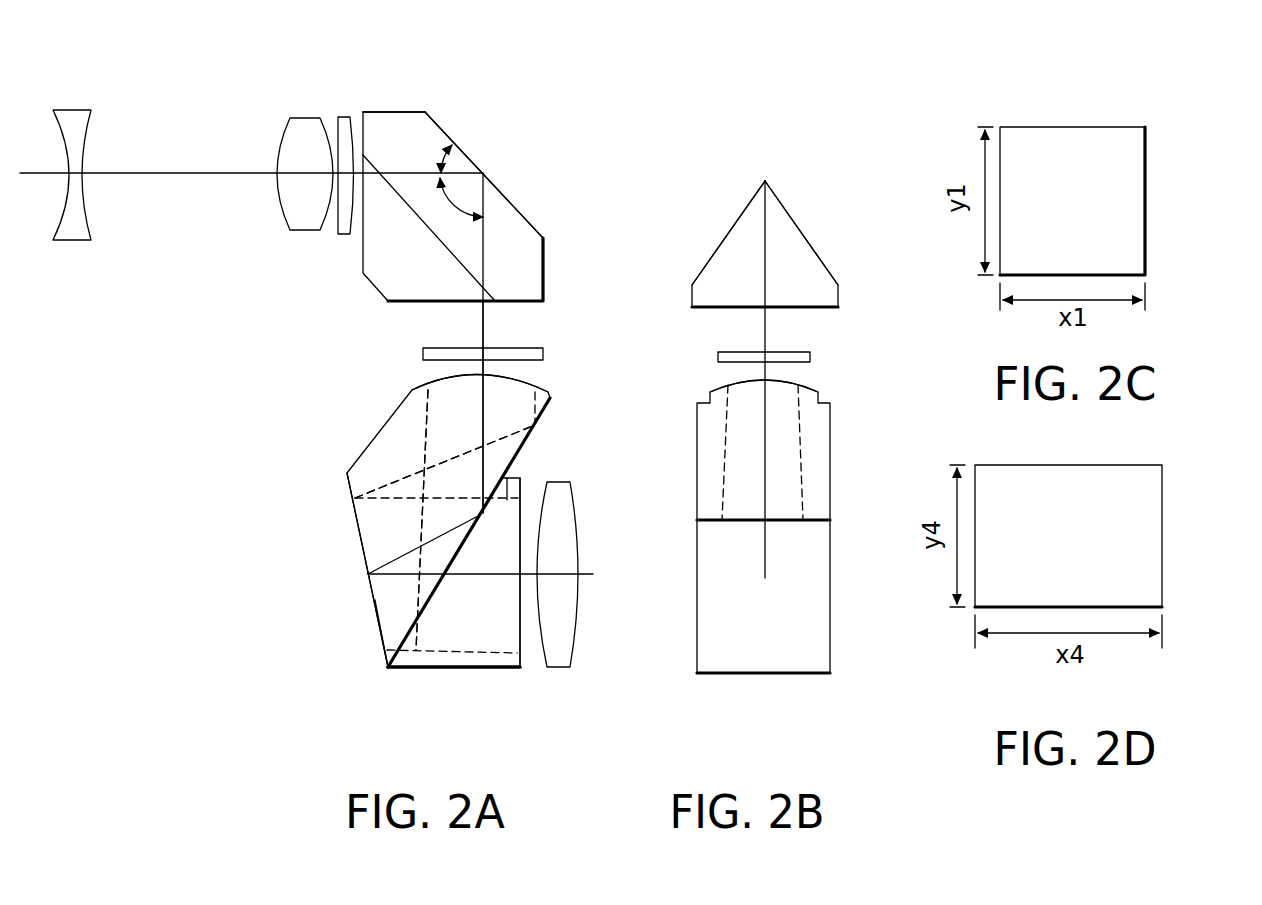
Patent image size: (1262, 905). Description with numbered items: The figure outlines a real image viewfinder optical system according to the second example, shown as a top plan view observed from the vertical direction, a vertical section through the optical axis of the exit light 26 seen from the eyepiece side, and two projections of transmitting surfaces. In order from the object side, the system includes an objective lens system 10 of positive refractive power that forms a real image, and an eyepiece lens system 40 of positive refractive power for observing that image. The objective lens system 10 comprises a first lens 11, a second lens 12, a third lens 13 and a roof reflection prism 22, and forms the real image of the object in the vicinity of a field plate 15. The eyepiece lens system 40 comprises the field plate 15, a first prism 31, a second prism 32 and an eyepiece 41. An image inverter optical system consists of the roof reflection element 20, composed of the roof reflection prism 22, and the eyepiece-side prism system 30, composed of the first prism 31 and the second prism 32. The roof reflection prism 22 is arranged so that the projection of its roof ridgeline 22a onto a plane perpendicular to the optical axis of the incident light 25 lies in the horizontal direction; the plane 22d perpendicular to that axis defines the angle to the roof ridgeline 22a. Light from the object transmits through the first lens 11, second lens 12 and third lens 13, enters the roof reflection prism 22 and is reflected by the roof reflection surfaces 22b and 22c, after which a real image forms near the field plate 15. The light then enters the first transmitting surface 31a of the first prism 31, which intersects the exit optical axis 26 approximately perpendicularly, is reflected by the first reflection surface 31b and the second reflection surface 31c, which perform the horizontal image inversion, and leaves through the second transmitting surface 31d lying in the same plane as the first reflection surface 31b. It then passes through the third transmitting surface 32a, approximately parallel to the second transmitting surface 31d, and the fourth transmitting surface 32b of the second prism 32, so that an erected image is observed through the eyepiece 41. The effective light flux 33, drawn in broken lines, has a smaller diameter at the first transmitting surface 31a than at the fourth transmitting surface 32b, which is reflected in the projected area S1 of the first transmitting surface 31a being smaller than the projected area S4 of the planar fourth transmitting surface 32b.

In FIG. 2A, the objective lens system 10 is at (345, 332).
In FIG. 2A, the first lens 11 is at (73, 110).
In FIG. 2A, the second lens 12 is at (295, 118).
In FIG. 2A, the third lens 13 is at (345, 117).
In FIG. 2A, the field plate 15 is at (543, 355).
In FIG. 2B, the field plate 15 is at (718, 357).
In FIG. 2A, the roof reflection element 20 is at (372, 73).
In FIG. 2A, the roof reflection prism 22 is at (533, 272).
In FIG. 2B, the roof reflection prism 22 is at (727, 274).
In FIG. 2A, the roof ridgeline 22a is at (468, 152).
In FIG. 2B, the roof ridgeline 22a is at (765, 181).
In FIG. 2B, the roof reflection surface 22b is at (740, 215).
In FIG. 2B, the roof reflection surface 22c is at (782, 200).
In FIG. 2A, the plane perpendicular to the optical axis 22d is at (360, 112).
In FIG. 2A, the optical axis of the incident light 25 is at (201, 173).
In FIG. 2A, the optical axis of the exit light 26 is at (483, 328).
In FIG. 2B, the optical axis of the exit light 26 is at (765, 330).
In FIG. 2A, the eyepiece-side prism system 30 is at (325, 365).
In FIG. 2A, the first prism 31 is at (515, 402).
In FIG. 2B, the first prism 31 is at (717, 410).
In FIG. 2A, the first transmitting surface 31a is at (528, 382).
In FIG. 2B, the first transmitting surface 31a is at (720, 383).
In FIG. 2A, the first reflection surface 31b is at (497, 440).
In FIG. 2A, the second reflection surface 31c is at (368, 568).
In FIG. 2A, the second transmitting surface 31d is at (383, 640).
In FIG. 2A, the second prism 32 is at (468, 660).
In FIG. 2B, the second prism 32 is at (705, 653).
In FIG. 2A, the third transmitting surface 32a is at (408, 660).
In FIG. 2A, the fourth transmitting surface 32b is at (520, 645).
In FIG. 2A, the effective light flux 33 is at (425, 455).
In FIG. 2B, the effective light flux 33 is at (803, 498).
In FIG. 2A, the eyepiece lens system 40 is at (575, 728).
In FIG. 2A, the eyepiece 41 is at (568, 650).
In FIG. 2C, the projected area of the first transmitting surface S1 is at (1135, 182).
In FIG. 2D, the projected area of the fourth transmitting surface S4 is at (1153, 547).